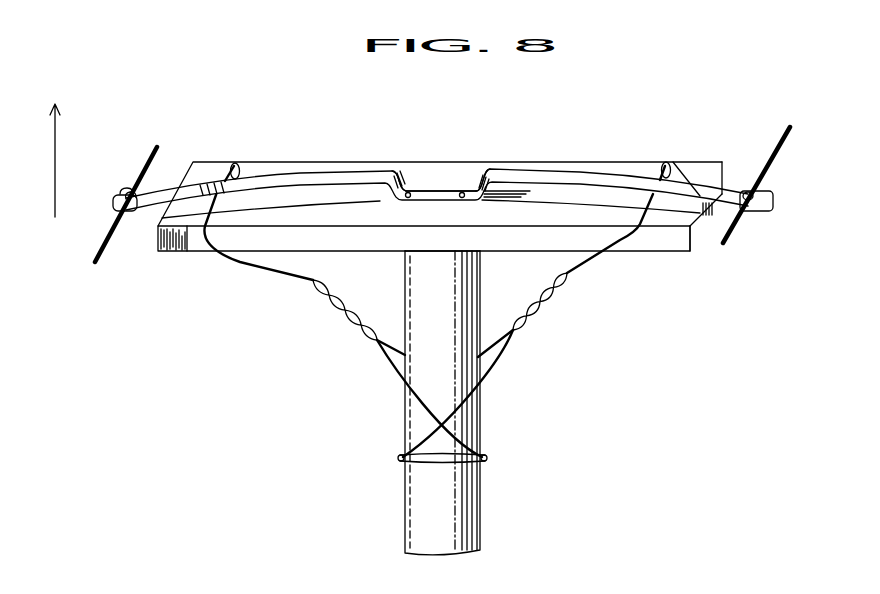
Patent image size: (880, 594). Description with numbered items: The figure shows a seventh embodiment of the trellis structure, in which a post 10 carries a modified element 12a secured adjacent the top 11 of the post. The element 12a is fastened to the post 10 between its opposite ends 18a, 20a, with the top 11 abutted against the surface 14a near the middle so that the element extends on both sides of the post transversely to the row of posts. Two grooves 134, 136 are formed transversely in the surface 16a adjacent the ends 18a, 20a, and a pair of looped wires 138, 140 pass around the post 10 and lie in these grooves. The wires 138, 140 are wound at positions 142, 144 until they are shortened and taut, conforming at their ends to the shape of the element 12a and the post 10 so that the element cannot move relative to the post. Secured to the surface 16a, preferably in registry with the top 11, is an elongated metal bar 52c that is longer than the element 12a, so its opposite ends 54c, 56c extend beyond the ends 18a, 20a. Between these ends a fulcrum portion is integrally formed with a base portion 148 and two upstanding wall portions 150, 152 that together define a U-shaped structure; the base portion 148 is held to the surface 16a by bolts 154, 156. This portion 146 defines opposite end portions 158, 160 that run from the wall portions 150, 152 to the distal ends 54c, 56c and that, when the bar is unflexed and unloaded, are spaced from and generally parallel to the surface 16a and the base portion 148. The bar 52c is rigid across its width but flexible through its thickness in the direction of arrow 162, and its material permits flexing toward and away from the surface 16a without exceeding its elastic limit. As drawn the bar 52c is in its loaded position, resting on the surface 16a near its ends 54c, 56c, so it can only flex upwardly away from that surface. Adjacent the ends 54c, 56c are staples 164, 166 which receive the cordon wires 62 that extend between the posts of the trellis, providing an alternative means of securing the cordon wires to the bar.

The post 10 is at (482, 498).
The top 11 is at (480, 254).
The modified element 12a is at (537, 163).
The surface 14a is at (655, 243).
The surface 16a is at (698, 165).
The end 18a is at (162, 238).
The end 20a is at (695, 233).
The bar 52c is at (322, 178).
The end 54c is at (116, 205).
The end 56c is at (772, 207).
The cordon wire 62 is at (143, 161).
The groove 134 is at (236, 165).
The groove 136 is at (666, 163).
The looped wire 138 is at (397, 375).
The looped wire 140 is at (597, 260).
The position 142 is at (330, 312).
The position 144 is at (532, 322).
The portion 146 is at (488, 155).
The base portion 148 is at (434, 194).
The wall portion 150 is at (396, 201).
The wall portion 152 is at (472, 198).
The bolt 154 is at (406, 199).
The bolt 156 is at (461, 199).
The end portion 158 is at (296, 204).
The end portion 160 is at (582, 203).
The arrow 162 is at (55, 146).
The staple 164 is at (135, 193).
The staple 166 is at (756, 194).